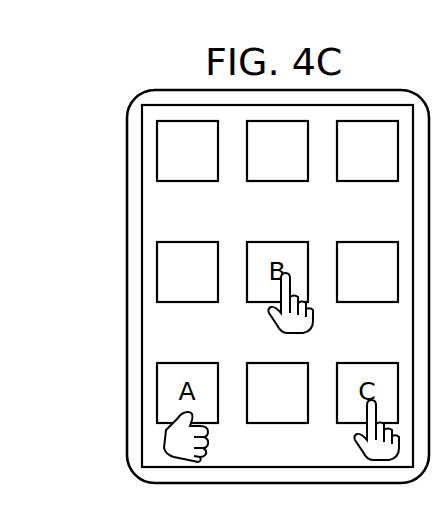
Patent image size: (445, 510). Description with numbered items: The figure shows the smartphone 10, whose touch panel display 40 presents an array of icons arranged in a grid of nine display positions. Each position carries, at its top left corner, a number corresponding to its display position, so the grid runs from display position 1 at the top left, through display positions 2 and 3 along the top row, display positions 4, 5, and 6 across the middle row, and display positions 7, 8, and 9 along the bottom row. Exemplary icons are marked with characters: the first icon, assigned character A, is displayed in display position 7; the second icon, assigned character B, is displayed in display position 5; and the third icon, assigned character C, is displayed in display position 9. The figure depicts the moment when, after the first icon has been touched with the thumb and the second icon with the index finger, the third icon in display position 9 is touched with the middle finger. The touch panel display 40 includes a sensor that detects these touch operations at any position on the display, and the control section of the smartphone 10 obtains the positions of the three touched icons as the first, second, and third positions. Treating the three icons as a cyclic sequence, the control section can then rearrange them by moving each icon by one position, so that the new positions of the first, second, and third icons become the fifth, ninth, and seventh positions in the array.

The smartphone 10 is at (127, 148).
The touch panel display 40 is at (172, 210).
The display position 1 is at (187, 151).
The display position 2 is at (277, 151).
The display position 3 is at (367, 151).
The display position 4 is at (187, 272).
The display position 5 is at (277, 272).
The display position 6 is at (367, 272).
The display position 7 is at (187, 393).
The display position 8 is at (277, 393).
The display position 9 is at (367, 393).